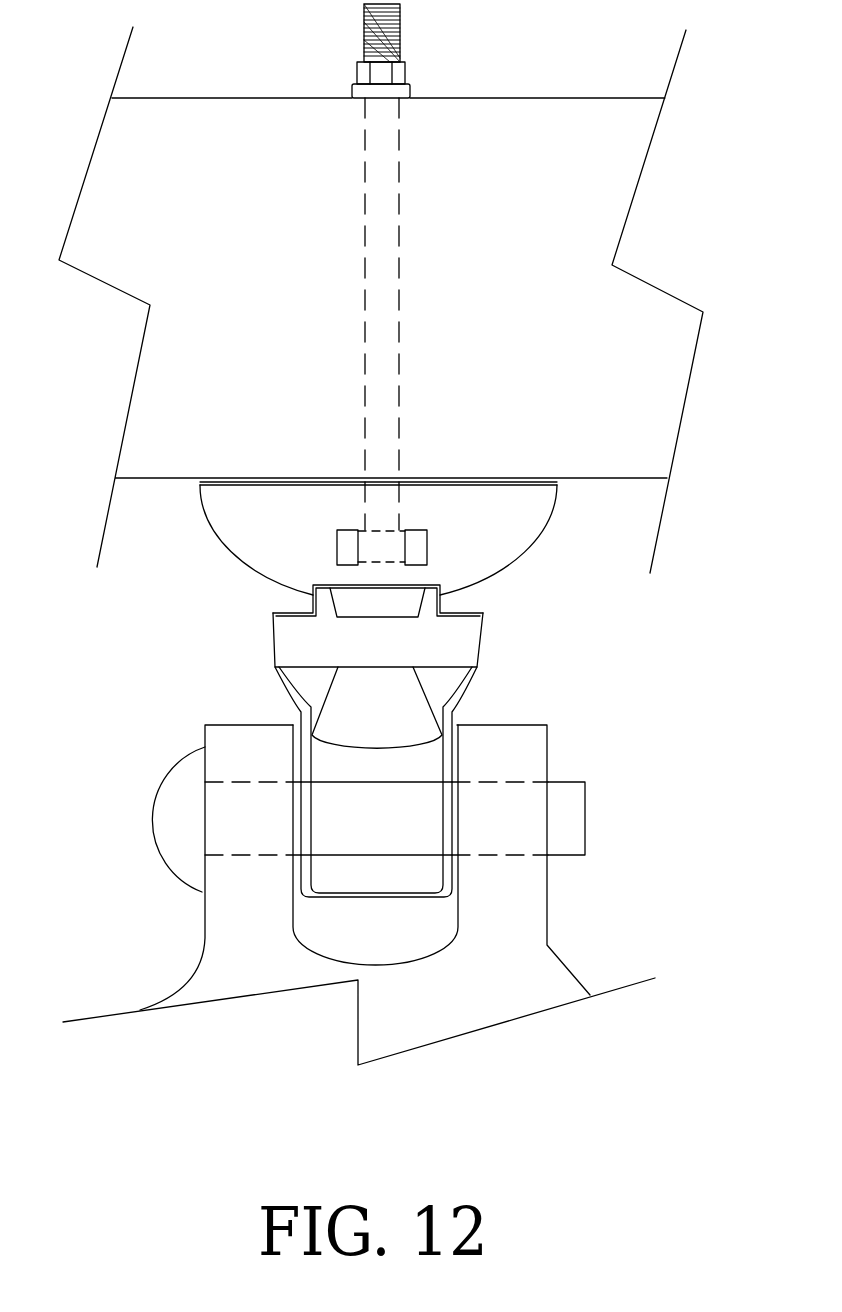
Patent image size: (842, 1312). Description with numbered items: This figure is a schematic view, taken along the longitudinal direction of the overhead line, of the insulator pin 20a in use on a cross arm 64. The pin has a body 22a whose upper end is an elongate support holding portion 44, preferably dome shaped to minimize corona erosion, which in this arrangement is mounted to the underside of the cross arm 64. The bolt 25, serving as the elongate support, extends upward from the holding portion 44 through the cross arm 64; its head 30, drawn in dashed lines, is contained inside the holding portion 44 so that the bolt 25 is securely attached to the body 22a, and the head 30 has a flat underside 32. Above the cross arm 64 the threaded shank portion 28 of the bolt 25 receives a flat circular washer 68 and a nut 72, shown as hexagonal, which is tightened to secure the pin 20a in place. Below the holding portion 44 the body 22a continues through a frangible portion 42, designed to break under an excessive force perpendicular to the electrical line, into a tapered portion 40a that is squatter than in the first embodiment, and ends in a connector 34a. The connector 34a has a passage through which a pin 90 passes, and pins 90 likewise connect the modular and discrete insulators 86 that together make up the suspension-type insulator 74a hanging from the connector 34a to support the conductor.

The threaded shank portion 28 is at (401, 24).
The nut 72 is at (406, 74).
The washer 68 is at (411, 92).
The bolt 25 is at (400, 283).
The cross arm 64 is at (655, 430).
The flat underside 32 is at (347, 530).
The head 30 is at (433, 531).
The elongate support holding portion 44 is at (517, 552).
The frangible portion 42 is at (432, 606).
The insulator pin 20a is at (163, 588).
The body 22a is at (216, 656).
The tapered portion 40a is at (468, 664).
The pin 90 is at (152, 832).
The insulator 74a is at (642, 880).
The connector 34a is at (360, 895).
The insulators 86 is at (550, 972).